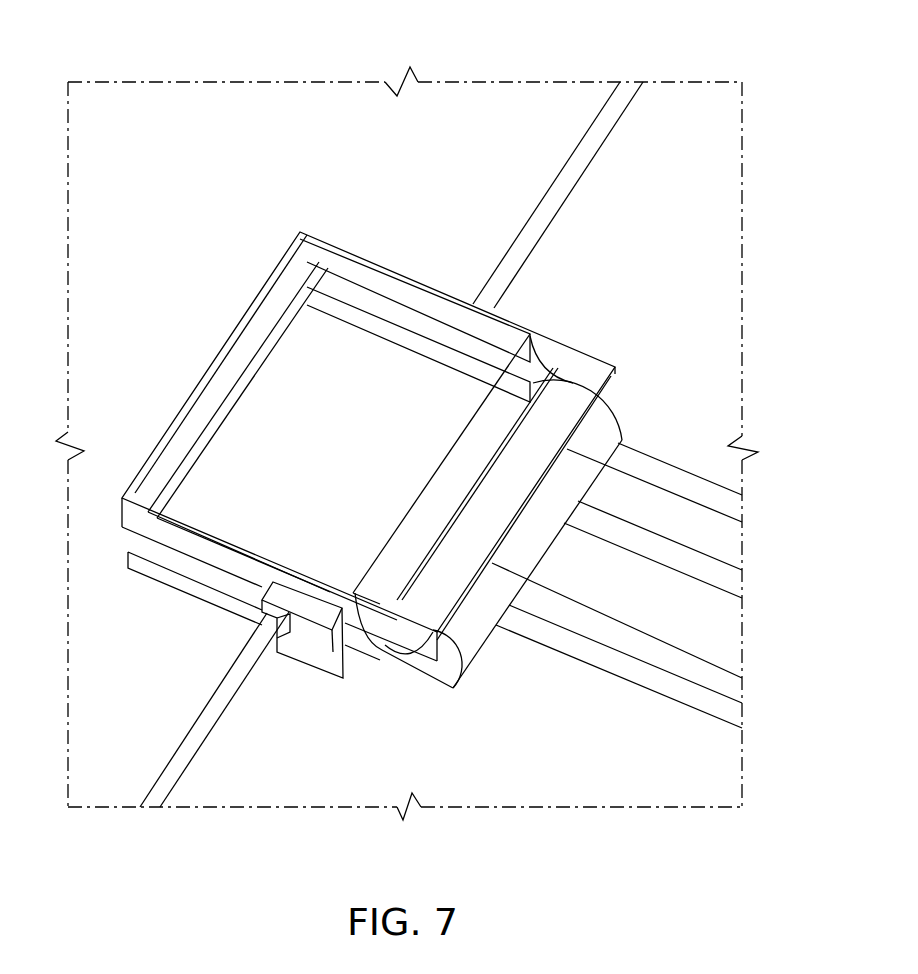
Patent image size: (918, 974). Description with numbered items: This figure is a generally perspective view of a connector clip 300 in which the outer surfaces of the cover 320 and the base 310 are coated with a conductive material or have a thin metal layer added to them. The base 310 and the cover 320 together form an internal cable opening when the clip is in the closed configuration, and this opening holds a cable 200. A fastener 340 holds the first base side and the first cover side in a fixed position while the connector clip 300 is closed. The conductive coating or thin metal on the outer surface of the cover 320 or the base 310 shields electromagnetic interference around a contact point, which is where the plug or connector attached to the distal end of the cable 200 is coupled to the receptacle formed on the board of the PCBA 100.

The PCBA 100 is at (524, 126).
The cable 200 is at (696, 556).
The connector clip 300 is at (372, 447).
The base 310 is at (228, 620).
The cover 320 is at (283, 398).
The fastener 340 is at (381, 664).